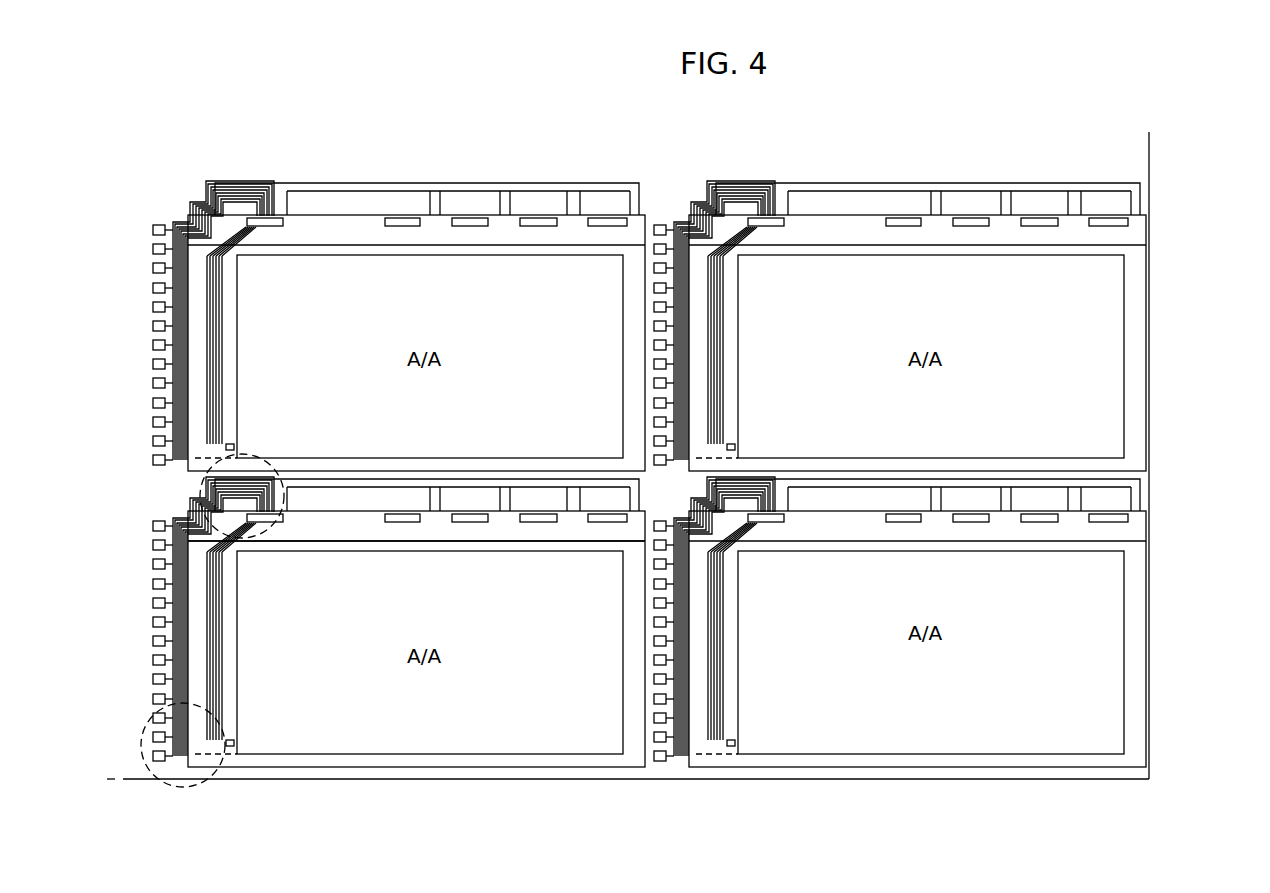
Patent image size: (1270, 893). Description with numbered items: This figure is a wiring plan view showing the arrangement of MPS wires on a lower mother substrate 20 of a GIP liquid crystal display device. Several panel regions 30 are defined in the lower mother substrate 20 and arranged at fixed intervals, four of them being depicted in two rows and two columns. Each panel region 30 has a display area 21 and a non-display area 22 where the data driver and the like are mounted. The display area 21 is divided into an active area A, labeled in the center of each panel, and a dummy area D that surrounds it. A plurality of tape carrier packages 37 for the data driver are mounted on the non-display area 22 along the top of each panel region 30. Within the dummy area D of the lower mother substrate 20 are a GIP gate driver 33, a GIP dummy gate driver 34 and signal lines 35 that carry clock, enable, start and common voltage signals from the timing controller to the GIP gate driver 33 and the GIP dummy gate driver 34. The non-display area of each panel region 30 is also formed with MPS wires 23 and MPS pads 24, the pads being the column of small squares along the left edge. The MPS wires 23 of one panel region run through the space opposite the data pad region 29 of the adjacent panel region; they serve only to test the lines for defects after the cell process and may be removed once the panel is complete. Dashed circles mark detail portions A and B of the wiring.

The lower mother substrate 20 is at (1152, 159).
The display area 21 is at (1112, 621).
The non-display area 22 is at (695, 541).
The MPS wires 23 is at (192, 516).
The MPS pads 24 is at (154, 567).
The data pad region 29 is at (1082, 530).
The panel region 30 is at (720, 623).
The GIP gate driver 33 is at (228, 654).
The GIP dummy gate driver 34 is at (230, 752).
The signal lines 35 is at (206, 614).
The tape carrier packages 37 is at (275, 522).
The active area A is at (250, 452).
The region B is at (142, 750).
The dummy area D is at (1138, 668).